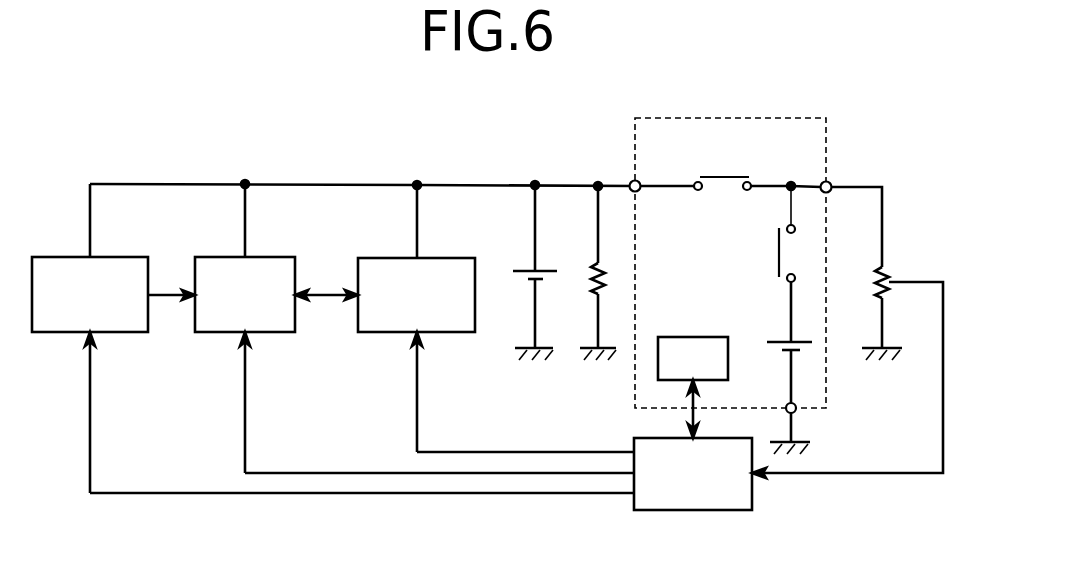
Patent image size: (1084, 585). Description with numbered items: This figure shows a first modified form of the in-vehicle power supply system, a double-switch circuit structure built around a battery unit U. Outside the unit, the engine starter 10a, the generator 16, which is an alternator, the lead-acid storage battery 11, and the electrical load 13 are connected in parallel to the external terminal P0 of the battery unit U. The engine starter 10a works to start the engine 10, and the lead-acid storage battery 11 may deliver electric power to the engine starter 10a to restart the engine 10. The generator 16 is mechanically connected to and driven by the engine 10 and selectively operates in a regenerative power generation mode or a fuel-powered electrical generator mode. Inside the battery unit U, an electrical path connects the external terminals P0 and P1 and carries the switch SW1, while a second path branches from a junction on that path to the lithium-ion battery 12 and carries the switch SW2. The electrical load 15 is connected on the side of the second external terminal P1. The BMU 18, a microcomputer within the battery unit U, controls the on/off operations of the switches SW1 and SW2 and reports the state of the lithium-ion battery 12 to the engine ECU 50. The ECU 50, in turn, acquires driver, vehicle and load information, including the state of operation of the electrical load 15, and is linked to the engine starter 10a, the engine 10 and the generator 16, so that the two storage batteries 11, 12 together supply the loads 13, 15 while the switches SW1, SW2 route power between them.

The engine starter 10a is at (125, 257).
The engine 10 is at (272, 257).
The generator 16 is at (452, 258).
The lead-acid storage battery 11 is at (549, 271).
The electrical load 13 is at (595, 287).
The lithium-ion battery 12 is at (782, 342).
The electrical load 15 is at (878, 283).
The BMU 18 is at (713, 337).
The engine ECU 50 is at (718, 515).
The battery unit U is at (773, 118).
The external terminal P0 is at (630, 180).
The external terminal P1 is at (830, 180).
The switch SW1 is at (727, 177).
The switch SW2 is at (778, 250).